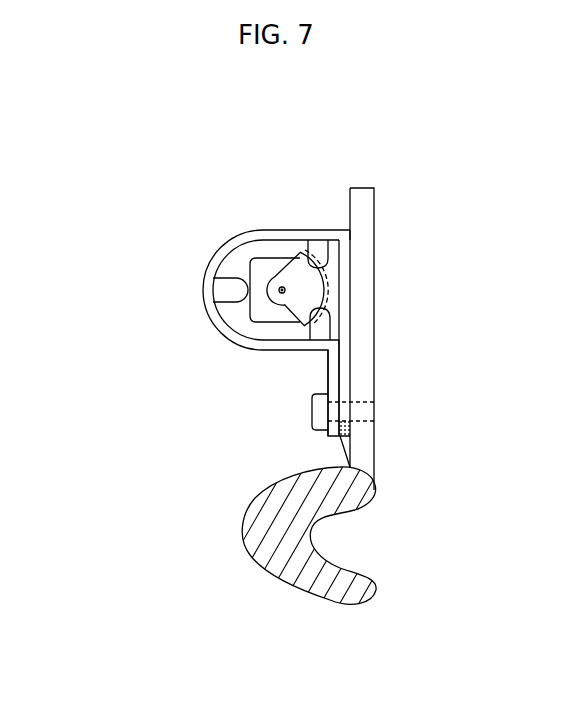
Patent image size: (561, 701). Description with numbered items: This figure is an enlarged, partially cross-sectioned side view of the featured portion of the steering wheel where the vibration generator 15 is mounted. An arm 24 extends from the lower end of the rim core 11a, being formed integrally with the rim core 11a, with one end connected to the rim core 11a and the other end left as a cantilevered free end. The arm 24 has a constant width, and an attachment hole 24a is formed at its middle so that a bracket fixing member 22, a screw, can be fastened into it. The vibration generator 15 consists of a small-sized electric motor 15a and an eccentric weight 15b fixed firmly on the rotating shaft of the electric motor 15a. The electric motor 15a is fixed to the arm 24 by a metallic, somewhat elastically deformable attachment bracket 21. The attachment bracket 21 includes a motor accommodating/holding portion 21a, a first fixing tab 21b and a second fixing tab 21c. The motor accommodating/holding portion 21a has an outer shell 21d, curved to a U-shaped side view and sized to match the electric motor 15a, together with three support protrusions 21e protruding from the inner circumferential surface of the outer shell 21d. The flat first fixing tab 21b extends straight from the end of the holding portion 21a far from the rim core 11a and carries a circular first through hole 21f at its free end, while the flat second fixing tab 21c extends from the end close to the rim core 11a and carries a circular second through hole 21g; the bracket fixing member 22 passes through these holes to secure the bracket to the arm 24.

The rim core 11a is at (339, 590).
The vibration generator 15 is at (279, 213).
The electric motor 15a is at (258, 277).
The eccentric weight 15b is at (302, 265).
The attachment bracket 21 is at (255, 311).
The motor accommodating/holding portion 21a is at (255, 247).
The first fixing tab 21b is at (343, 283).
The second fixing tab 21c is at (330, 373).
The outer shell 21d is at (236, 262).
The support protrusions 21e is at (230, 290).
The first through hole 21f is at (352, 443).
The second through hole 21g is at (336, 440).
The bracket fixing member 22 is at (311, 412).
The arm 24 is at (390, 339).
The attachment hole 24a is at (362, 402).